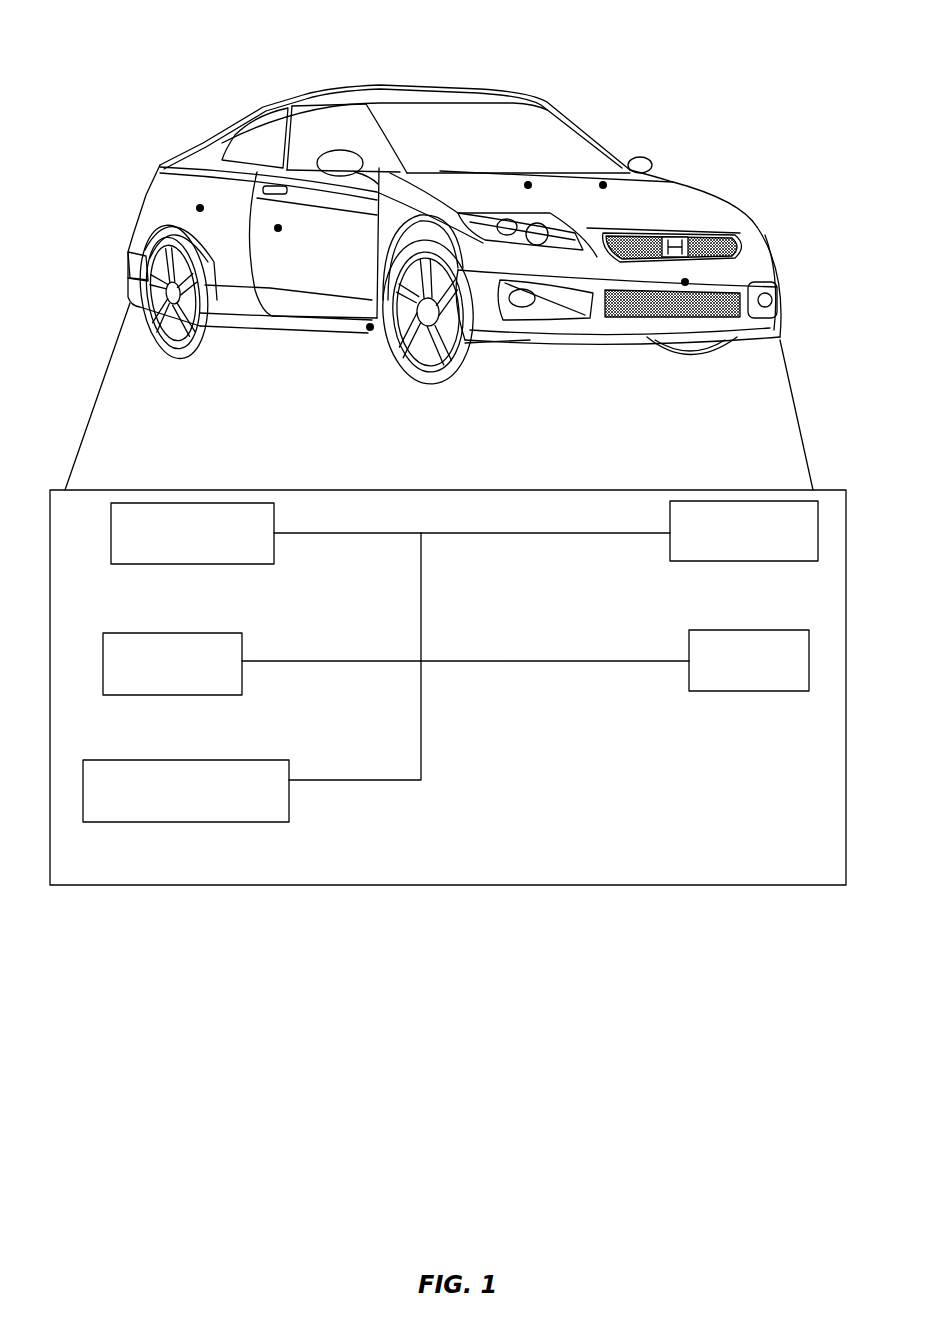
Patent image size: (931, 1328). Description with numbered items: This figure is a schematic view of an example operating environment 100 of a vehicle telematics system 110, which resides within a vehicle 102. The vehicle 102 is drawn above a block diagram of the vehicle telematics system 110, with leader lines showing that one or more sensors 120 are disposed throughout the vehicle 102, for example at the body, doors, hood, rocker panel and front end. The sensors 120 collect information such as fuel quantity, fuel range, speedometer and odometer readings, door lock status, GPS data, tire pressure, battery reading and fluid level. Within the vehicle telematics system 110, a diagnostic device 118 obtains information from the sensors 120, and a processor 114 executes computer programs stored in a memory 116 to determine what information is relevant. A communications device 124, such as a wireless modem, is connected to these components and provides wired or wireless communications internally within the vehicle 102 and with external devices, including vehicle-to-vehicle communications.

The operating environment 100 is at (110, 70).
The vehicle 102 is at (473, 88).
The vehicle telematics system 110 is at (227, 490).
The processor 114 is at (195, 565).
The memory 116 is at (747, 563).
The diagnostic device 118 is at (191, 698).
The sensors 120 is at (528, 183).
The communications device 124 is at (189, 823).